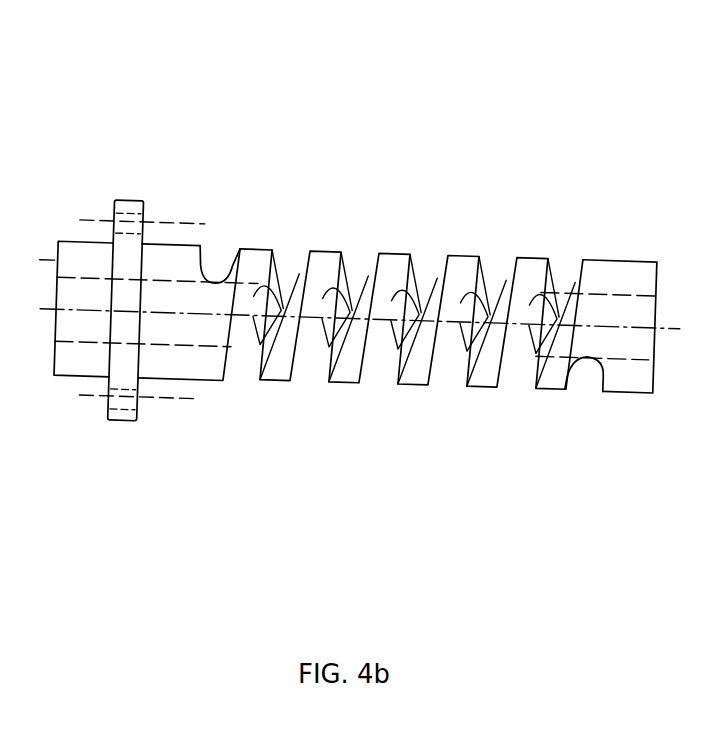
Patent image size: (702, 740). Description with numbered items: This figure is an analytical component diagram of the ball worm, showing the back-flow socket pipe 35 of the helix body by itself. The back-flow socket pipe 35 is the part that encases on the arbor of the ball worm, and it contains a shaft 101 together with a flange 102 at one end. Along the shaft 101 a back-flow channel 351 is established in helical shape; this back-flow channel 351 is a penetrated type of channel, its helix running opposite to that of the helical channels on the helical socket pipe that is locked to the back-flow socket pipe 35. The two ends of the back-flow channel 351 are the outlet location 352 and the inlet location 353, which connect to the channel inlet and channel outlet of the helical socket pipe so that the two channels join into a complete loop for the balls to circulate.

The shaft 101 is at (75, 242).
The flange 102 is at (128, 200).
The back-flow socket pipe 35 is at (466, 334).
The back-flow channel 351 is at (404, 283).
The outlet location 352 is at (587, 362).
The inlet location 353 is at (213, 275).